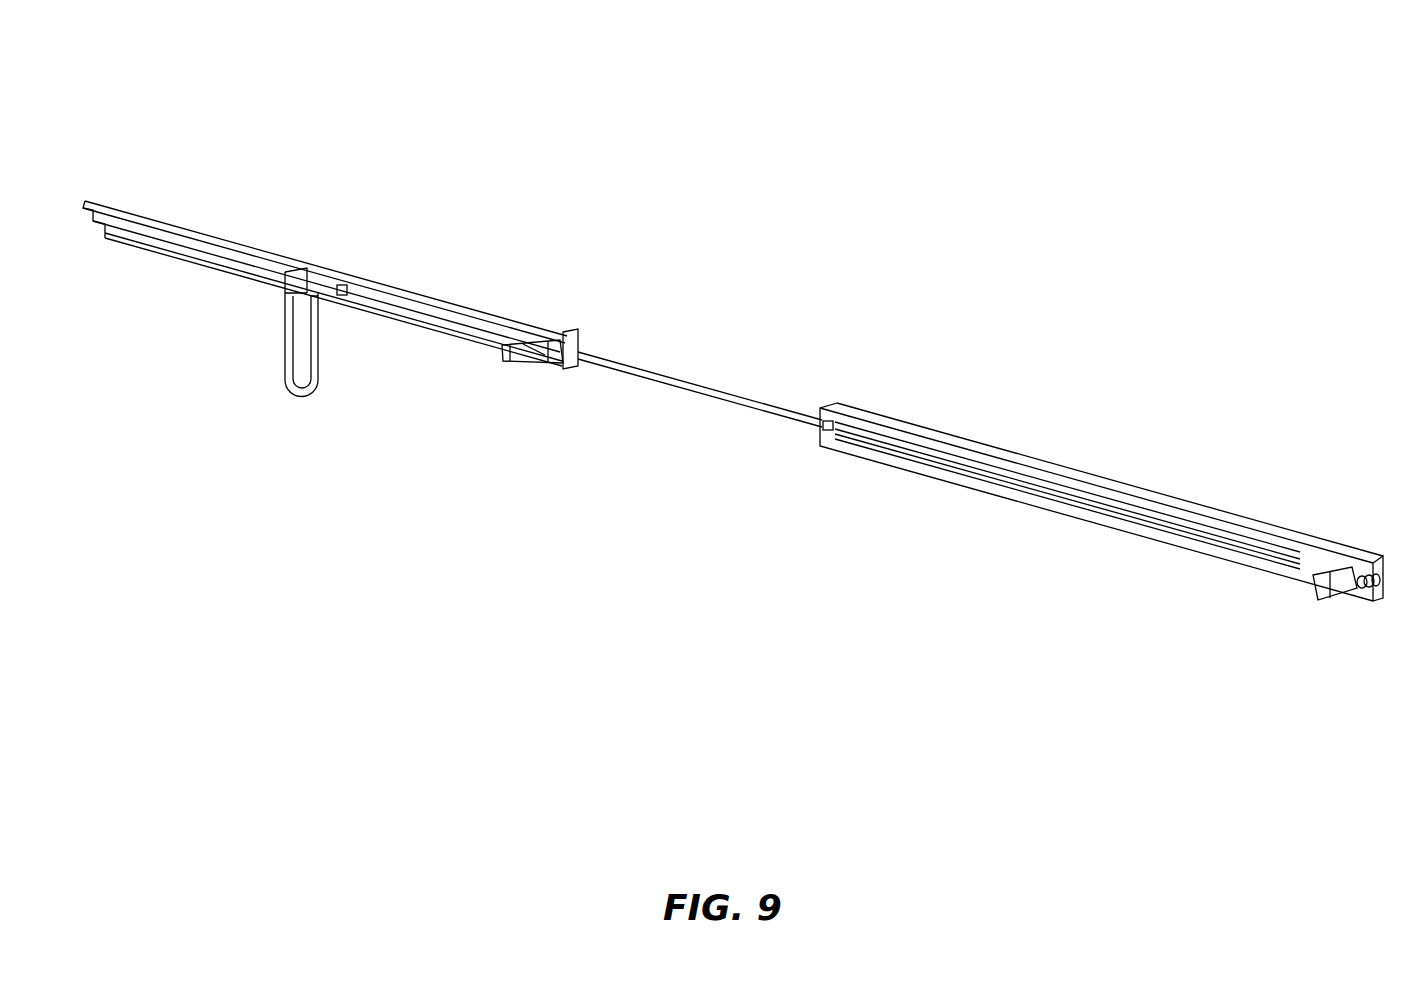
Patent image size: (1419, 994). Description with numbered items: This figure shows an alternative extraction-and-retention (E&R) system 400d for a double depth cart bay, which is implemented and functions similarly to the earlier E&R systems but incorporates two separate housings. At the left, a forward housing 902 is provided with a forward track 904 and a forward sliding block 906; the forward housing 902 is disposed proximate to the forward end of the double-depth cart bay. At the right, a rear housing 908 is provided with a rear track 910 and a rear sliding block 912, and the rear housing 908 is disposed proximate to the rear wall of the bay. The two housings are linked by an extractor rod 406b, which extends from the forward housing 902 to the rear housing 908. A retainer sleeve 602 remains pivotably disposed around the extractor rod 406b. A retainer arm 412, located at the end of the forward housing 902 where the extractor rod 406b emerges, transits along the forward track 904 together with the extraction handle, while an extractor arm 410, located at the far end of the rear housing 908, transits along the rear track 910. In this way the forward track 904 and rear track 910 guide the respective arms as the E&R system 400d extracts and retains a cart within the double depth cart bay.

The E&R system 400d is at (138, 107).
The forward housing 902 is at (330, 316).
The forward track 904 is at (405, 315).
The retainer sleeve 602 is at (488, 333).
The forward sliding block 906 is at (315, 278).
The retainer arm 412 is at (540, 345).
The extractor rod 406b is at (690, 383).
The rear housing 908 is at (1101, 548).
The rear track 910 is at (1185, 530).
The rear sliding block 912 is at (1318, 575).
The extractor arm 410 is at (1330, 605).